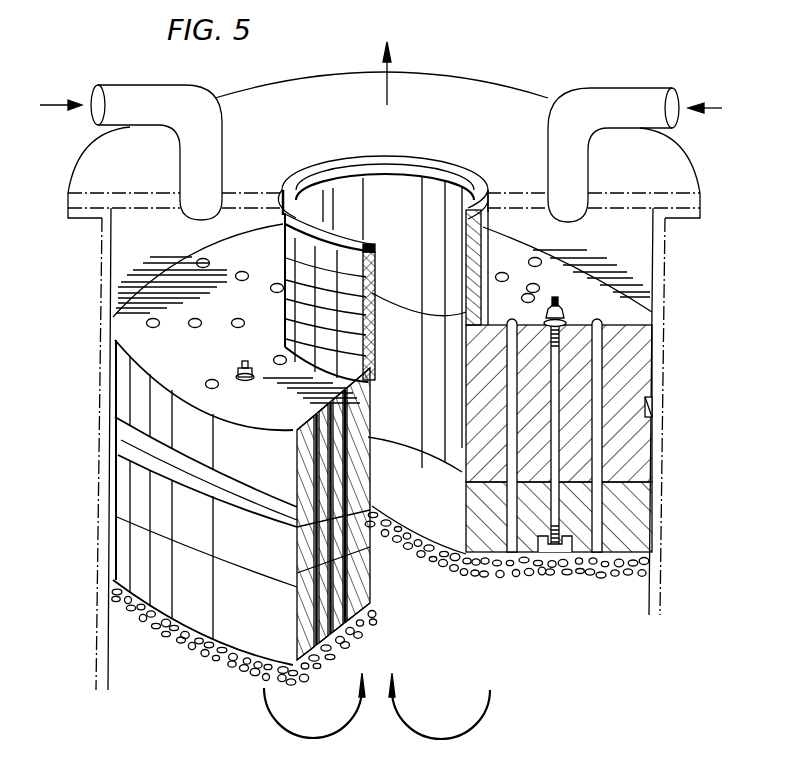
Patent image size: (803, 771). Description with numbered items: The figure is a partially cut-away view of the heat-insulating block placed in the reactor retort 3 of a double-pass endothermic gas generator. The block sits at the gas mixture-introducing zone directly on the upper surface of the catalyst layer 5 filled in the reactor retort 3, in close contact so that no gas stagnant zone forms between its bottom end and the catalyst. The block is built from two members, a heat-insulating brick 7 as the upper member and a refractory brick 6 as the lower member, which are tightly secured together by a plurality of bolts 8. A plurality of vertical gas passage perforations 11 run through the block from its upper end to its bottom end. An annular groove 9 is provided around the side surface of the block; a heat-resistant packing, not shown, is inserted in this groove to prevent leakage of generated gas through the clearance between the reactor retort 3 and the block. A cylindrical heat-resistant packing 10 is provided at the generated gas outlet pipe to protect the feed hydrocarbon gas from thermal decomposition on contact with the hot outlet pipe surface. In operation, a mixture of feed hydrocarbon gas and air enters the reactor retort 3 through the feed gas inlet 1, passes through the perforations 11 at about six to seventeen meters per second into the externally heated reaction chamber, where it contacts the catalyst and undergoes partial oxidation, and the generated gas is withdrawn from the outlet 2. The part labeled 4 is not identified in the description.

The feed gas inlet 1 is at (84, 92).
The outlet 2 is at (400, 190).
The reactor retort 3 is at (99, 466).
The cover dome with flange 4 is at (73, 175).
The catalyst layer 5 is at (196, 655).
The refractory brick 6 is at (638, 512).
The heat-insulating brick 7 is at (636, 352).
The bolts 8 is at (552, 314).
The annular groove 9 is at (652, 408).
The cylindrical heat-resistant packing 10 is at (290, 260).
The vertical gas passage perforations 11 is at (598, 440).